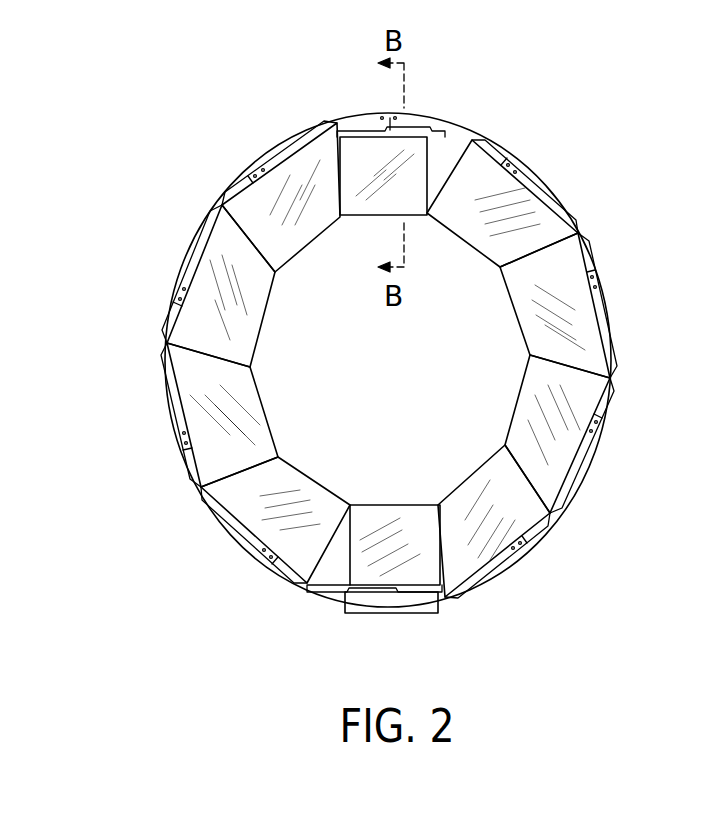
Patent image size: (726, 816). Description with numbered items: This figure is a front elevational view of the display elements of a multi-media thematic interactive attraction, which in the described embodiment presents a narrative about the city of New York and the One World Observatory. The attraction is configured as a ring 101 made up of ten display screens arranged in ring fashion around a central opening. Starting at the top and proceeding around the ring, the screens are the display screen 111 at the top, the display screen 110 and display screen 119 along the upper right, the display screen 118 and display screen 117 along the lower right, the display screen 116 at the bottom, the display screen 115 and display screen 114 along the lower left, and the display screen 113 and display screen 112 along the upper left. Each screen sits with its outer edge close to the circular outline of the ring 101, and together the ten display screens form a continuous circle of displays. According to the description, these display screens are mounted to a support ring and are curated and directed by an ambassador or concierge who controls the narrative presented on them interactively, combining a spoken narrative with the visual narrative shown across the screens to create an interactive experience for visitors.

The ring 101 is at (640, 188).
The display screen 110 is at (511, 200).
The display screen 111 is at (441, 150).
The display screen 112 is at (260, 206).
The display screen 113 is at (209, 294).
The display screen 114 is at (206, 440).
The display screen 115 is at (238, 522).
The display screen 116 is at (345, 576).
The display screen 117 is at (488, 554).
The display screen 118 is at (570, 452).
The display screen 119 is at (607, 306).